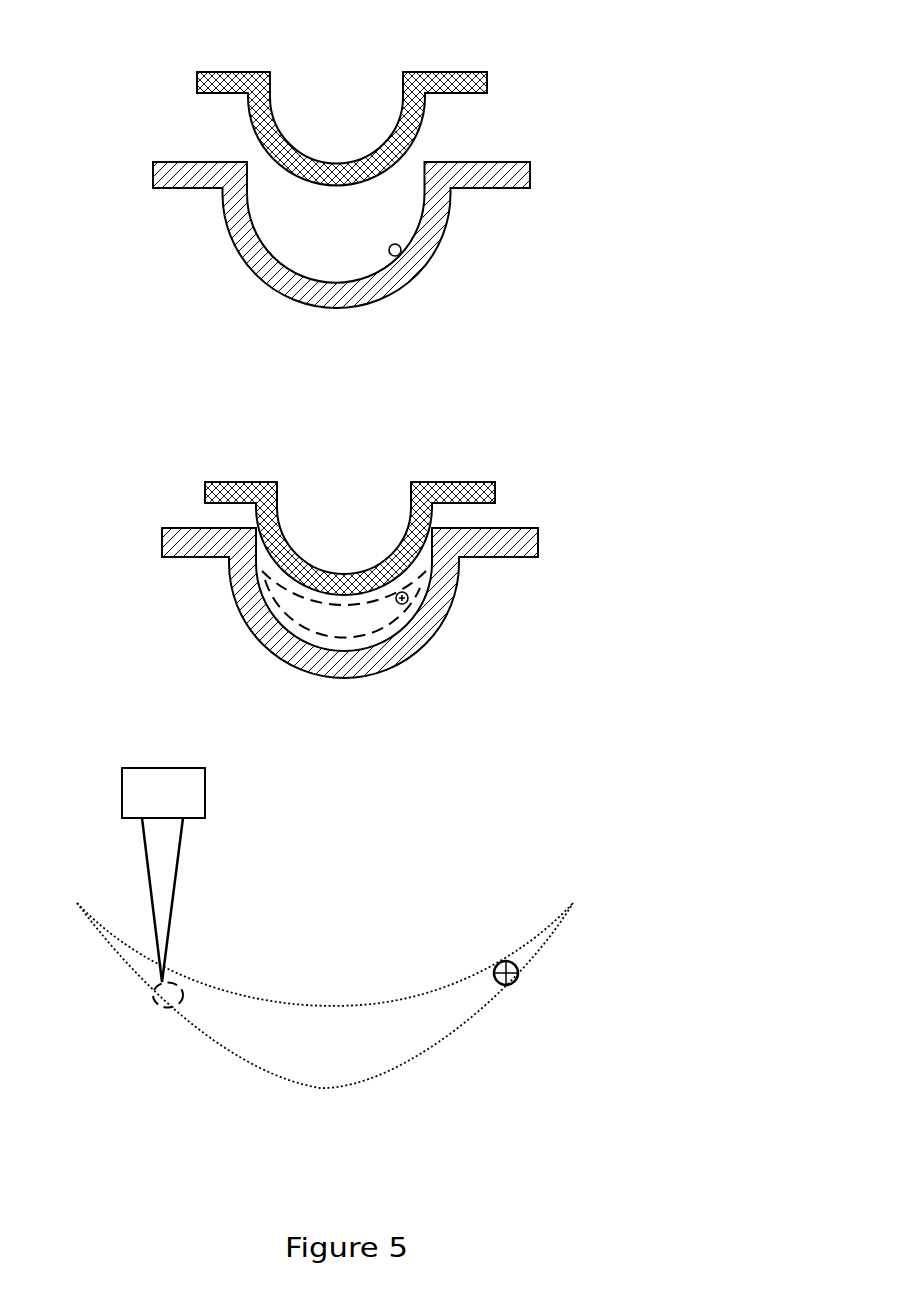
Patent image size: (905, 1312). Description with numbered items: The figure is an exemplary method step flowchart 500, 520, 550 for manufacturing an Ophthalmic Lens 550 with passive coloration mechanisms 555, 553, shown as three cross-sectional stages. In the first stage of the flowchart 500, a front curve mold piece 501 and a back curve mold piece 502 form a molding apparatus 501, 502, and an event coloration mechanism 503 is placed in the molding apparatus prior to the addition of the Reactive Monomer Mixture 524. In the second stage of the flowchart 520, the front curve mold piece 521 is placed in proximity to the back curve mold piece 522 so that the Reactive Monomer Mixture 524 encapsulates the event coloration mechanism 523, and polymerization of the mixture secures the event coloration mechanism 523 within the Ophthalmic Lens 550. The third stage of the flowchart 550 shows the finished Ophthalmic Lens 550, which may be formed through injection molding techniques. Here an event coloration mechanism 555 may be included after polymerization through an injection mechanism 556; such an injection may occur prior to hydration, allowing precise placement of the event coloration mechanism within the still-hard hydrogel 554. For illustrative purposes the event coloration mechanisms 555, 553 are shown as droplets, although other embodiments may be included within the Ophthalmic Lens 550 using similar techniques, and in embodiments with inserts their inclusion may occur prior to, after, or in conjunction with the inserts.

The method step flowchart 500 is at (281, 186).
The front curve mold piece 501 is at (153, 178).
The back curve mold piece 502 is at (197, 80).
The event coloration mechanism 503 is at (401, 250).
The method step flowchart 520 is at (306, 582).
The front curve mold piece 521 is at (162, 548).
The back curve mold piece 522 is at (205, 483).
The event coloration mechanism 523 is at (409, 596).
The Reactive Monomer Mixture 524 is at (372, 617).
The Ophthalmic Lens 550 is at (361, 959).
The event coloration mechanism 553 is at (520, 979).
The still-hard hydrogel 554 is at (462, 1020).
The event coloration mechanism 555 is at (140, 995).
The injection mechanism 556 is at (132, 802).